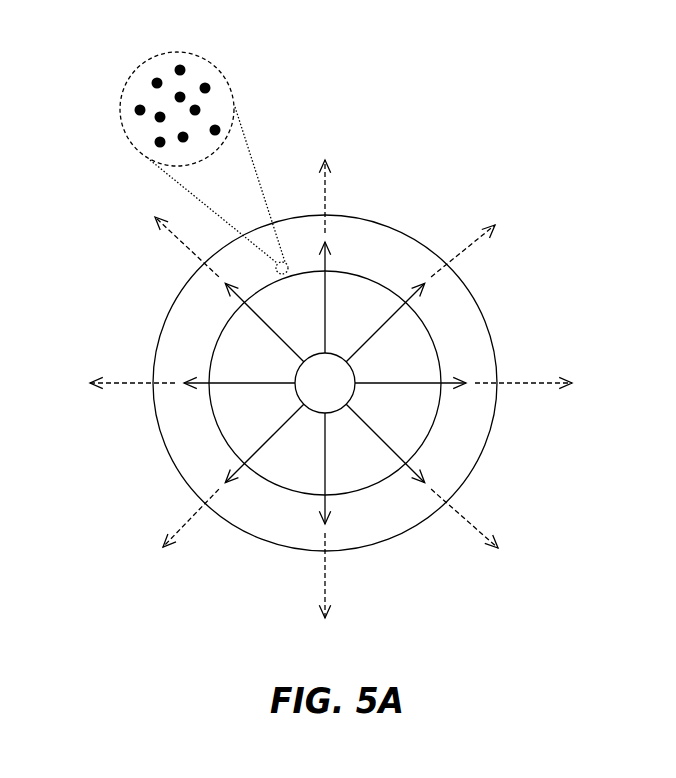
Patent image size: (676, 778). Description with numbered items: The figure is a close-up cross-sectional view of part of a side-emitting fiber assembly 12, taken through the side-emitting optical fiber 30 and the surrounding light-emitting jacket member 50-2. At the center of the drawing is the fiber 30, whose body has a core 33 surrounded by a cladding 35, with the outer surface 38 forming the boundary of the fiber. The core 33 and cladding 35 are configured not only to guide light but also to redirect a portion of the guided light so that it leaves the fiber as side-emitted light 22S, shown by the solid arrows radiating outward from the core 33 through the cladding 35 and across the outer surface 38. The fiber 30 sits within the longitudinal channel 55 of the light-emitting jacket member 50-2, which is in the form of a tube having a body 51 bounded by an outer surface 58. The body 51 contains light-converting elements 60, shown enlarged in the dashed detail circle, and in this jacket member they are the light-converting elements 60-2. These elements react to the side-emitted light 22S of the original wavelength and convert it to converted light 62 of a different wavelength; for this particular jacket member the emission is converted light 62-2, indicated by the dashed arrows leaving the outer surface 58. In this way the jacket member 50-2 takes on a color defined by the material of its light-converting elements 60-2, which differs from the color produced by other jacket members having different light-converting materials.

The side-emitting fiber assembly 12 is at (475, 173).
The side-emitted light 22S is at (327, 288).
The side-emitting optical fiber 30 is at (213, 422).
The core 33 is at (340, 398).
The cladding 35 is at (411, 376).
The outer surface 38 is at (222, 338).
The light-emitting jacket member 50-2 is at (370, 120).
The body 51 is at (373, 522).
The longitudinal channel 55 is at (275, 492).
The outer surface 58 is at (480, 307).
The light-converting elements 60 is at (212, 53).
The light-converting elements 60-2 is at (180, 65).
The converted light 62 is at (155, 243).
The converted light 62-2 is at (478, 244).